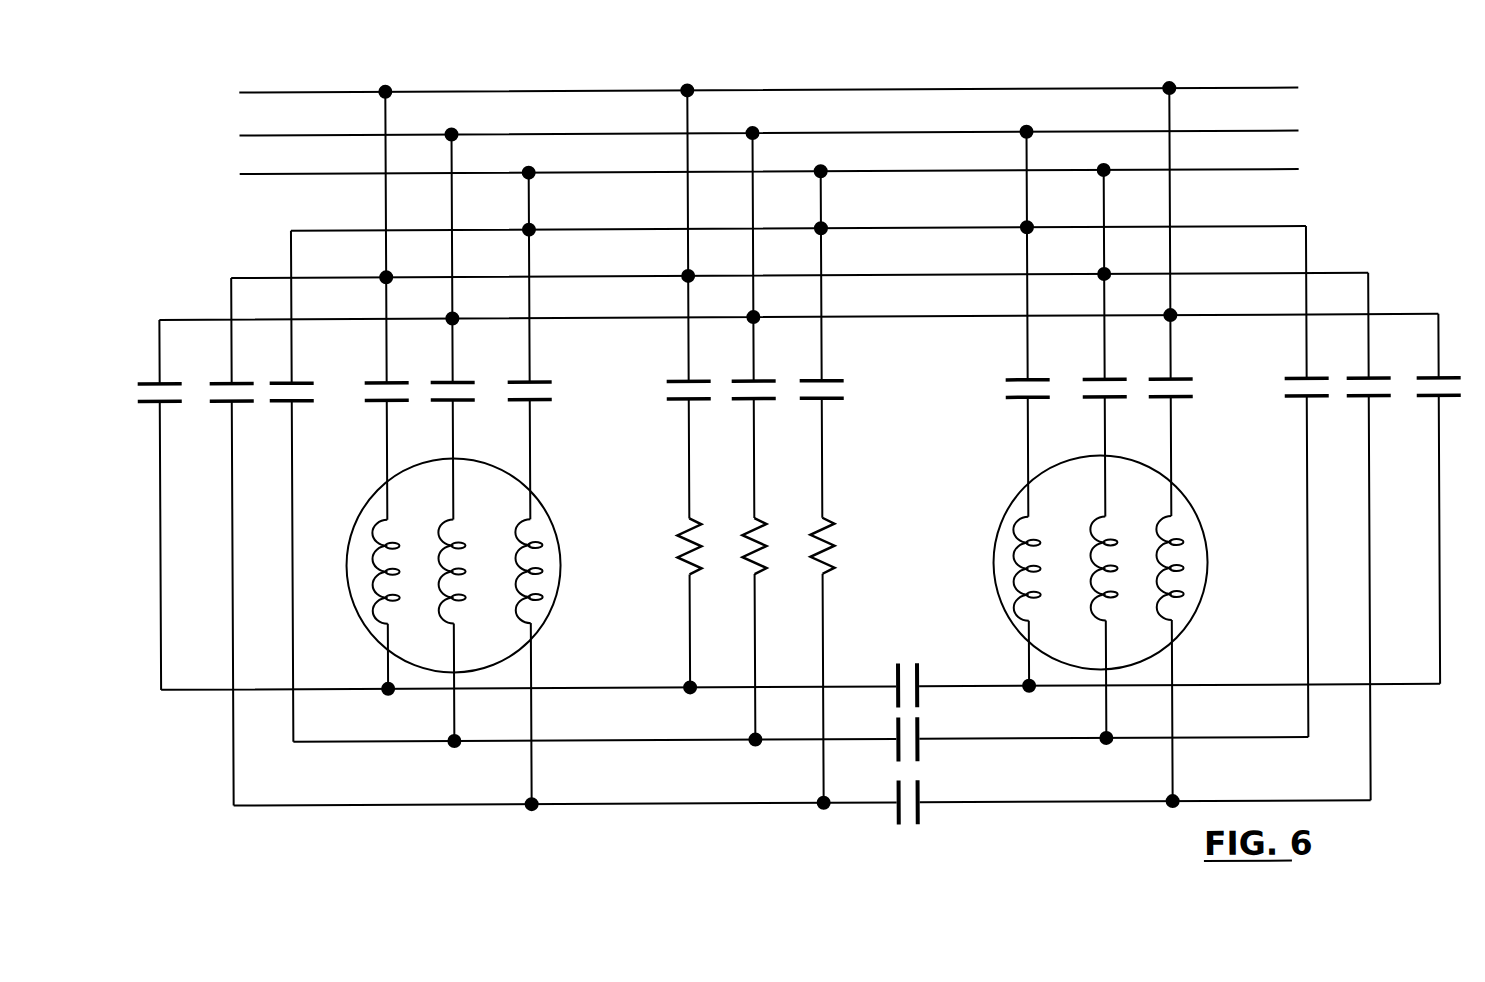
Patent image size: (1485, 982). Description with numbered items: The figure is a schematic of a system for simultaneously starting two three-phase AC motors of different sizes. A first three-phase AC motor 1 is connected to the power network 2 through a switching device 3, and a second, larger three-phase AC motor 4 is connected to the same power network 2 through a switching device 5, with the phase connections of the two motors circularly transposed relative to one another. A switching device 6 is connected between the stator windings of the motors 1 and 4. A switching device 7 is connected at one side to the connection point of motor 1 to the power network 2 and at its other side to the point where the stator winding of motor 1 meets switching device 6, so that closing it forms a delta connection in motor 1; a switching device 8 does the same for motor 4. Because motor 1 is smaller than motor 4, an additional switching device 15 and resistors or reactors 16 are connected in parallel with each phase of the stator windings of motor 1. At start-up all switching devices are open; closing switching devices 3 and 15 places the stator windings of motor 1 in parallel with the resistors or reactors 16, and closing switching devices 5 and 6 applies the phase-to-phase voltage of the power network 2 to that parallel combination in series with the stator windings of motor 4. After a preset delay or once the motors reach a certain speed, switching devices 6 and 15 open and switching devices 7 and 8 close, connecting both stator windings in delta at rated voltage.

The first three-phase AC motor 1 is at (461, 565).
The power network 2 is at (769, 112).
The switching device 3 is at (468, 375).
The second three-phase AC motor 4 is at (1109, 562).
The switching device 5 is at (1107, 369).
The switching device 6 is at (930, 734).
The switching device 7 is at (238, 376).
The switching device 8 is at (1380, 368).
The additional switching device 15 is at (774, 373).
The resistors or reactors 16 is at (779, 533).